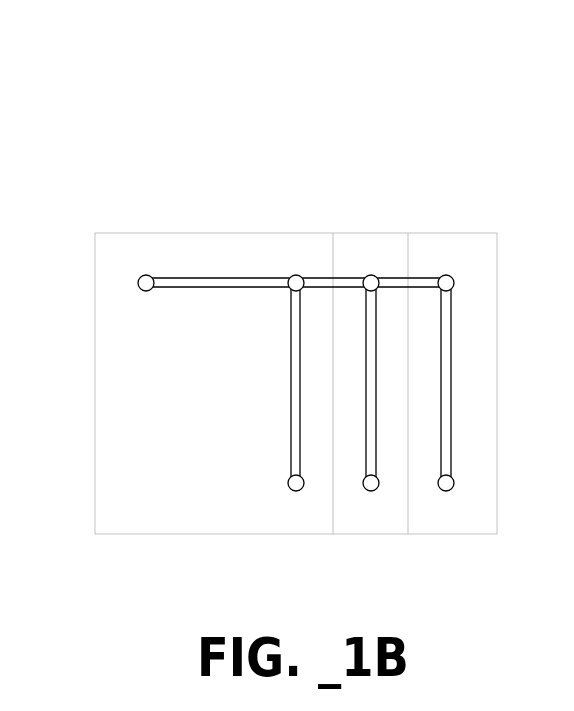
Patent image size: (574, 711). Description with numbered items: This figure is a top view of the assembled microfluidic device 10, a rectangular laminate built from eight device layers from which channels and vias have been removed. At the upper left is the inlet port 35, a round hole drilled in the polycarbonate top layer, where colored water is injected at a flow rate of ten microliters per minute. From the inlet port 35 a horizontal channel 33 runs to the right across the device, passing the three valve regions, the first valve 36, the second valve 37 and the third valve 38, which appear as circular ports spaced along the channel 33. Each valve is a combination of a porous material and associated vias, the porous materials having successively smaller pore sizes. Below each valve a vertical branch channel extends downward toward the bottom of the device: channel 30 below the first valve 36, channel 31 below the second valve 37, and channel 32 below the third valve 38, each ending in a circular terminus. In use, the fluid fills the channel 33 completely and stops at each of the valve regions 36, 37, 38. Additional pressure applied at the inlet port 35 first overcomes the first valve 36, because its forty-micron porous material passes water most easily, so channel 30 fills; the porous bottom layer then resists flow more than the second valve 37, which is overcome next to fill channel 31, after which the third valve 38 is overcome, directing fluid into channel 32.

The microfluidic device 10 is at (80, 84).
The channel 33 is at (205, 278).
The inlet port 35 is at (140, 279).
The first valve 36 is at (291, 278).
The second valve 37 is at (373, 278).
The third valve 38 is at (453, 280).
The channel 30 is at (303, 466).
The channel 31 is at (377, 466).
The channel 32 is at (453, 466).